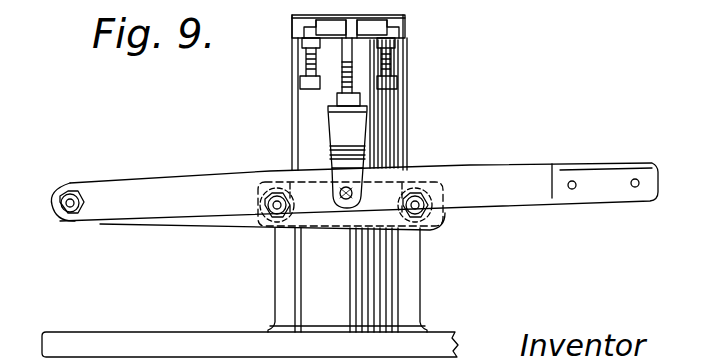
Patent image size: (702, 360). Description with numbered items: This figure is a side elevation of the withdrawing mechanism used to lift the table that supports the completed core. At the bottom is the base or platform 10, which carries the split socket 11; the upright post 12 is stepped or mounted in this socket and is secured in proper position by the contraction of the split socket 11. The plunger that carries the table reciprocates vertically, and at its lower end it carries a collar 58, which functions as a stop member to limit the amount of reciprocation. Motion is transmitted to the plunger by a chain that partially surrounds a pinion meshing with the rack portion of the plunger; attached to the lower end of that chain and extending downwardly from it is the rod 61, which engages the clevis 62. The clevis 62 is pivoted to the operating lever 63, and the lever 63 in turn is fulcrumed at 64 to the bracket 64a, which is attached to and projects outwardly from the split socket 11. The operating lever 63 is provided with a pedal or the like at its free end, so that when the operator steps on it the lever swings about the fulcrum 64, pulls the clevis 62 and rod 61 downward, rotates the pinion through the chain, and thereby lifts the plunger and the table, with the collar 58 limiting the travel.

The base 10 is at (166, 338).
The split socket 11 is at (410, 268).
The post 12 is at (292, 133).
The collar 58 is at (398, 27).
The rod 61 is at (352, 72).
The clevis 62 is at (357, 135).
The operating lever 63 is at (507, 197).
The fulcrum 64 is at (70, 210).
The bracket 64a is at (233, 226).